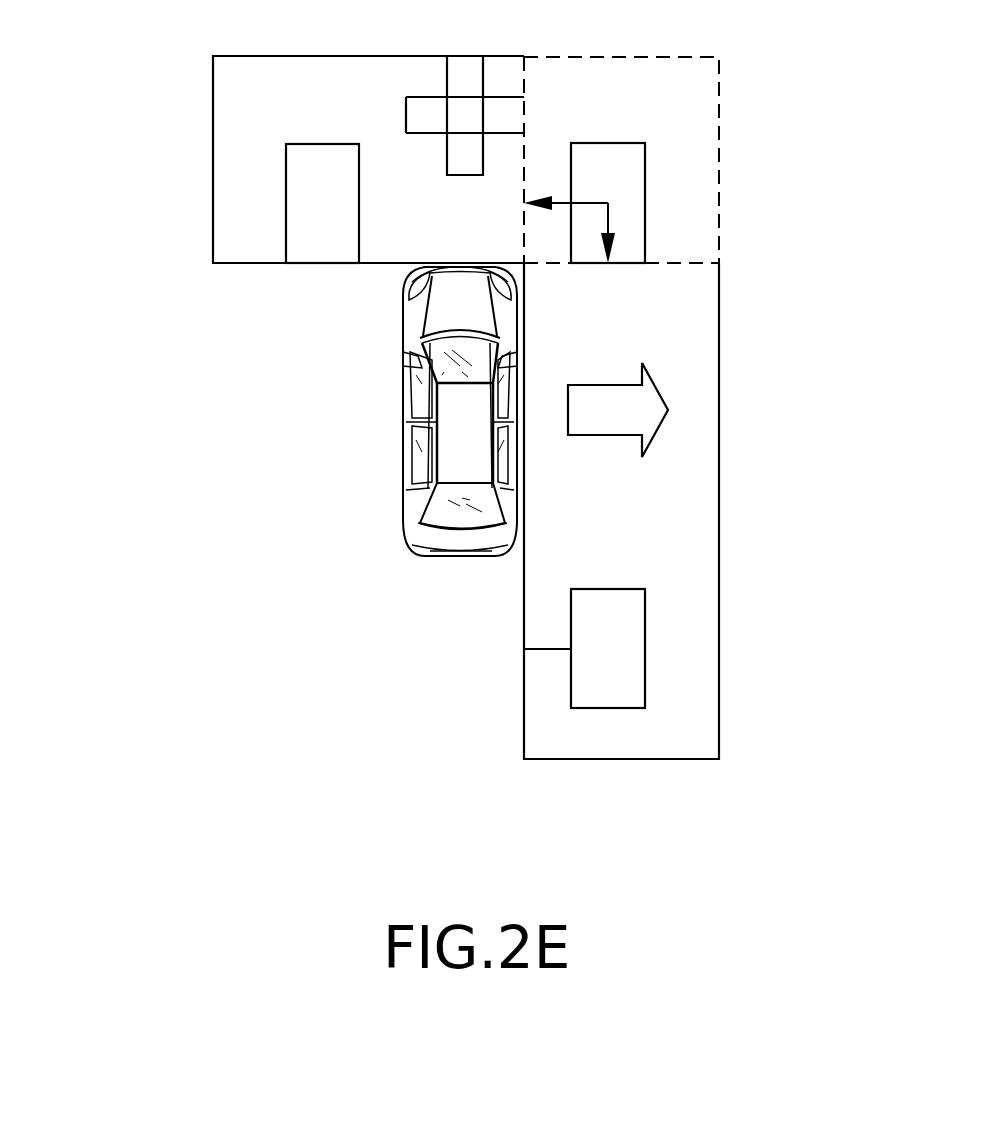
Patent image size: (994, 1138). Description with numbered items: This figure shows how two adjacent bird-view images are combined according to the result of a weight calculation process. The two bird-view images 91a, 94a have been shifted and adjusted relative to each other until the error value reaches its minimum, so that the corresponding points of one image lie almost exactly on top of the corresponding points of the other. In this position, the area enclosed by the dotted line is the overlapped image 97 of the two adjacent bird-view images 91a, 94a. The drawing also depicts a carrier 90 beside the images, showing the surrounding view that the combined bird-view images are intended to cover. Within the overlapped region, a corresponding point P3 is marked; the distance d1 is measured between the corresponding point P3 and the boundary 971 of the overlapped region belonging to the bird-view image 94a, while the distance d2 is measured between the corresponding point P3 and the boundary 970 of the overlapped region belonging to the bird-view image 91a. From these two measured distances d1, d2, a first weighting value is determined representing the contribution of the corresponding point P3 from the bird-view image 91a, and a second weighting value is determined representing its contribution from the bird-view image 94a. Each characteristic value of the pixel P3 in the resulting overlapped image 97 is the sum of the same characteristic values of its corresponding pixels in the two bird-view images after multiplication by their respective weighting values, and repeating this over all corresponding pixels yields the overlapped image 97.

The vehicle 90 is at (350, 530).
The bird-view image 91a is at (192, 276).
The bird-view image 94a is at (492, 762).
The overlapped image 97 is at (722, 64).
The boundary 970 is at (524, 233).
The boundary 971 is at (677, 265).
The corresponding point P3 is at (608, 203).
The distance d1 is at (627, 228).
The distance d2 is at (568, 187).